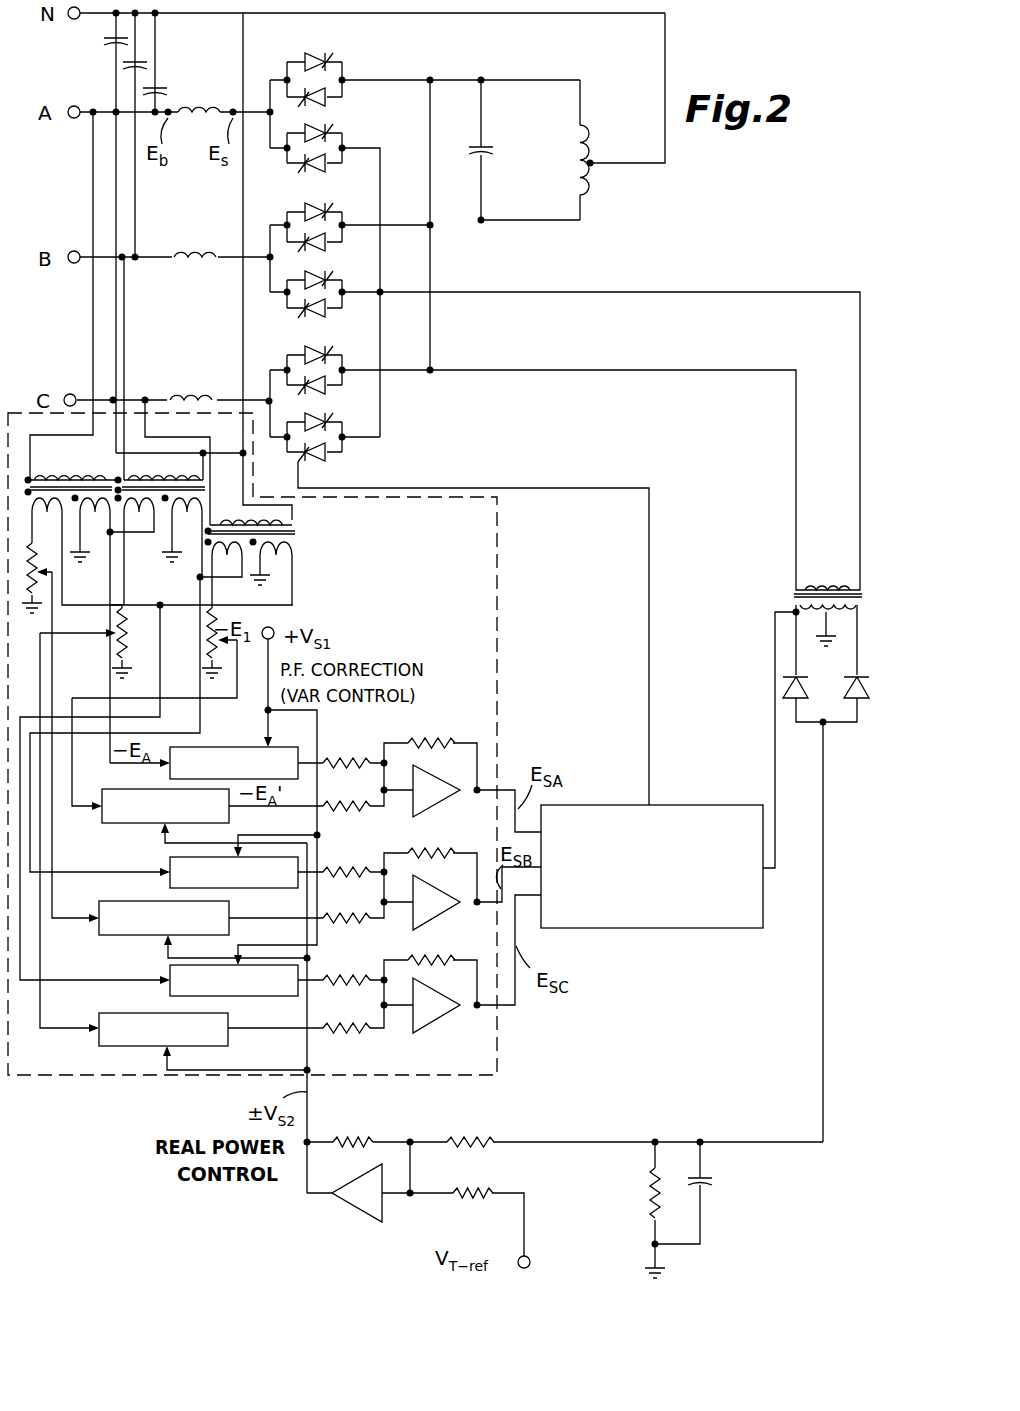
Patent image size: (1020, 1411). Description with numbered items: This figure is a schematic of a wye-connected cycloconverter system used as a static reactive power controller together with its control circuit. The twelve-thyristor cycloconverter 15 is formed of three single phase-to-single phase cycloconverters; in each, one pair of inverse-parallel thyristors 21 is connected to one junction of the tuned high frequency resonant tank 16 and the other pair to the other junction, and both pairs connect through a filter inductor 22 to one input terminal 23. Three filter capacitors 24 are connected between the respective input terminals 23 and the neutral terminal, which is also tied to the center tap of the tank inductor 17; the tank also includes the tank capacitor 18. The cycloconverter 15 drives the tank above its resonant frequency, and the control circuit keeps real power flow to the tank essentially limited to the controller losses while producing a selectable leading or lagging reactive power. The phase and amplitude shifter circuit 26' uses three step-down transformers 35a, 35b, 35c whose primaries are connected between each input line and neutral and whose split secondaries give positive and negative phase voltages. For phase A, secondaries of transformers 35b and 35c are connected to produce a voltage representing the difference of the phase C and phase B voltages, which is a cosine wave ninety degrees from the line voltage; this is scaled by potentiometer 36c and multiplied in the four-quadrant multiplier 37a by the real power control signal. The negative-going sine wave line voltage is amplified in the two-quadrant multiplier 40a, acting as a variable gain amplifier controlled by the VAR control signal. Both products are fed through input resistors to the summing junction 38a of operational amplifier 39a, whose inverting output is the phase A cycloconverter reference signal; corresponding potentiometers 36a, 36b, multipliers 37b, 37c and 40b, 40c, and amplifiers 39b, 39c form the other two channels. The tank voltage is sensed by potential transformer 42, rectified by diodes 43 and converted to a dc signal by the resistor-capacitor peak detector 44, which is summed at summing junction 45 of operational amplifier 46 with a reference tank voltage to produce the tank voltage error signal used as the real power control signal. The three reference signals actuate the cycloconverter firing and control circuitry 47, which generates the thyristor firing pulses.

The twelve-thyristor cycloconverter 15 is at (556, 414).
The tuned high frequency resonant tank 16 is at (593, 79).
The tank inductor 17 is at (572, 167).
The tank capacitor 18 is at (486, 158).
The inverse-parallel thyristors 21 is at (292, 155).
The filter inductor 22 is at (200, 105).
The input terminal 23 is at (70, 104).
The filter capacitor 24 is at (108, 41).
The phase and amplitude shifter circuit 26' is at (252, 762).
The step-down transformer 35a is at (80, 475).
The step-down transformer 35b is at (190, 473).
The step-down transformer 35c is at (296, 532).
The potentiometer 36a is at (54, 572).
The potentiometer 36b is at (112, 644).
The potentiometer 36c is at (200, 634).
The analog four-quadrant multiplier 37a is at (168, 787).
The analog four-quadrant multiplier 37b is at (153, 900).
The analog four-quadrant multiplier 37c is at (145, 1012).
The summing junction 38a is at (386, 795).
The operational amplifier 39a is at (428, 808).
The operational amplifier 39b is at (428, 918).
The operational amplifier 39c is at (428, 1022).
The two-quadrant multiplier 40a is at (240, 727).
The two-quadrant multiplier 40b is at (210, 890).
The two-quadrant multiplier 40c is at (216, 996).
The potential transformer 42 is at (862, 594).
The diodes 43 is at (862, 692).
The resistor-capacitor peak detector 44 is at (668, 1142).
The summing junction 45 is at (412, 1198).
The operational amplifier 46 is at (358, 1192).
The cycloconverter firing and control circuitry 47 is at (703, 805).